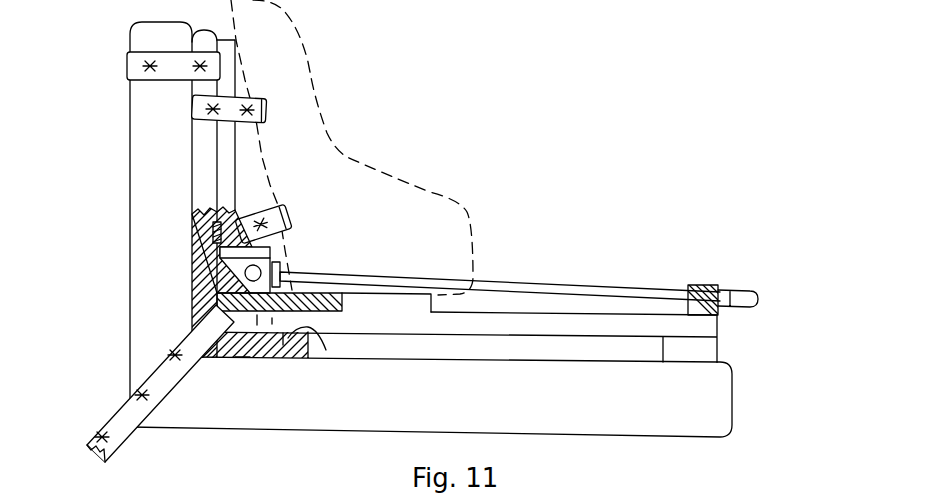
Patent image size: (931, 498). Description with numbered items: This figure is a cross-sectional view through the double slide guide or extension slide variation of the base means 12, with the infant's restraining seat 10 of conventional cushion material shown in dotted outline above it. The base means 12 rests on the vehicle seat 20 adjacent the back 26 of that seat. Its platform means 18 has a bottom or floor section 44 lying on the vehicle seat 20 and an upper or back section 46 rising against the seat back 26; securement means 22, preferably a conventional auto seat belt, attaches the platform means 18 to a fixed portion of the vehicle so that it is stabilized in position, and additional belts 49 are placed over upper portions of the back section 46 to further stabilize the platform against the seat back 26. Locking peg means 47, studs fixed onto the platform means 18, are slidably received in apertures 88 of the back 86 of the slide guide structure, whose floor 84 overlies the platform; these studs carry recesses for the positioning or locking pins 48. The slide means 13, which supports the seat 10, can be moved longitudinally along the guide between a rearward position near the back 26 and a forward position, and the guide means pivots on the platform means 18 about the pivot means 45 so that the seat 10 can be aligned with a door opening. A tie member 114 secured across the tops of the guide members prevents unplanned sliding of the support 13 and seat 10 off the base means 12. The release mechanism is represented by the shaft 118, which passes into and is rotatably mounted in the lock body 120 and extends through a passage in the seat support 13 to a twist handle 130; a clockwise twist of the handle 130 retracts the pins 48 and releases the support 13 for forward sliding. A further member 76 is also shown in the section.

The restraining seat 10 is at (311, 72).
The base means 12 is at (503, 340).
The slide means 13 is at (405, 318).
The platform means 18 is at (239, 370).
The vehicle seat 20 is at (600, 423).
The securement means 22 is at (190, 332).
The back of vehicle seat 26 is at (129, 124).
The bottom or floor section 44 is at (326, 350).
The pivot means 45 is at (283, 333).
The upper or back section 46 is at (205, 180).
The locking peg means 47 is at (282, 260).
The locking pins 48 is at (233, 327).
The additional belts 49 is at (126, 68).
The spacer 76 is at (685, 352).
The floor 84 is at (327, 293).
The back 86 is at (229, 158).
The apertures 88 is at (222, 292).
The tie member 114 is at (708, 285).
The shaft 118 is at (517, 282).
The lock body 120 is at (277, 250).
The twist handle 130 is at (742, 305).